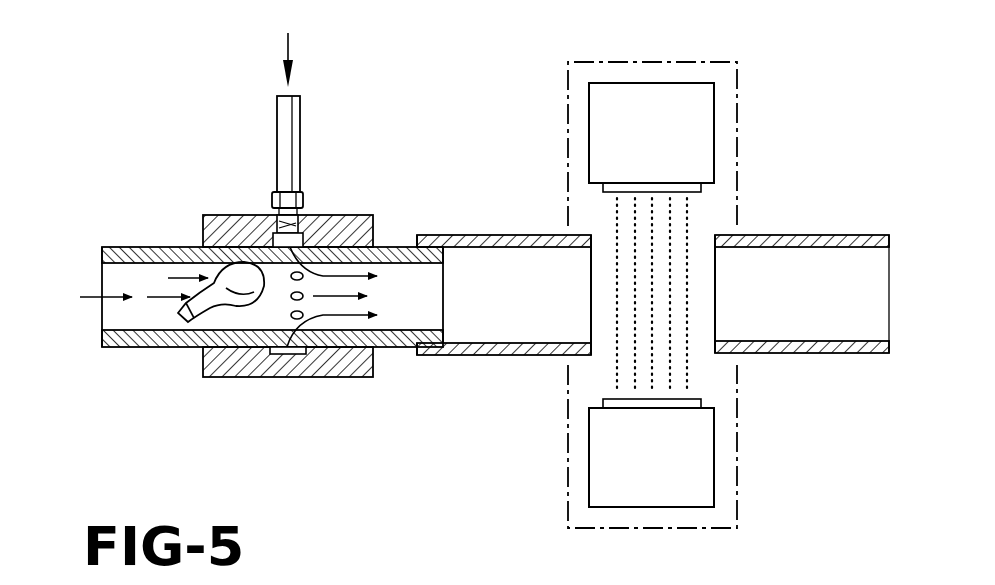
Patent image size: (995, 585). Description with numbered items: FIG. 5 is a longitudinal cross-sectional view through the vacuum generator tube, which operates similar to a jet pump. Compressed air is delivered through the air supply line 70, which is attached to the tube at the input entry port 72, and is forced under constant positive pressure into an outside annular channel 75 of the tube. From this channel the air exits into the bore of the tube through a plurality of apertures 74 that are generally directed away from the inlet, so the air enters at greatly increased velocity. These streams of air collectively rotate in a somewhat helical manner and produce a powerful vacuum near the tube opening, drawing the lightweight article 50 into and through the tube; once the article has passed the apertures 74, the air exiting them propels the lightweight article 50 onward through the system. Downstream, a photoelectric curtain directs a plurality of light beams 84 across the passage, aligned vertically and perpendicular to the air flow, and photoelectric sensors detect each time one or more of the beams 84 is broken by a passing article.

The lightweight article 50 is at (180, 312).
The air supply line 70 is at (283, 145).
The input entry port 72 is at (275, 212).
The apertures 74 is at (207, 246).
The annular channel 75 is at (335, 215).
The light beams 84 is at (687, 225).